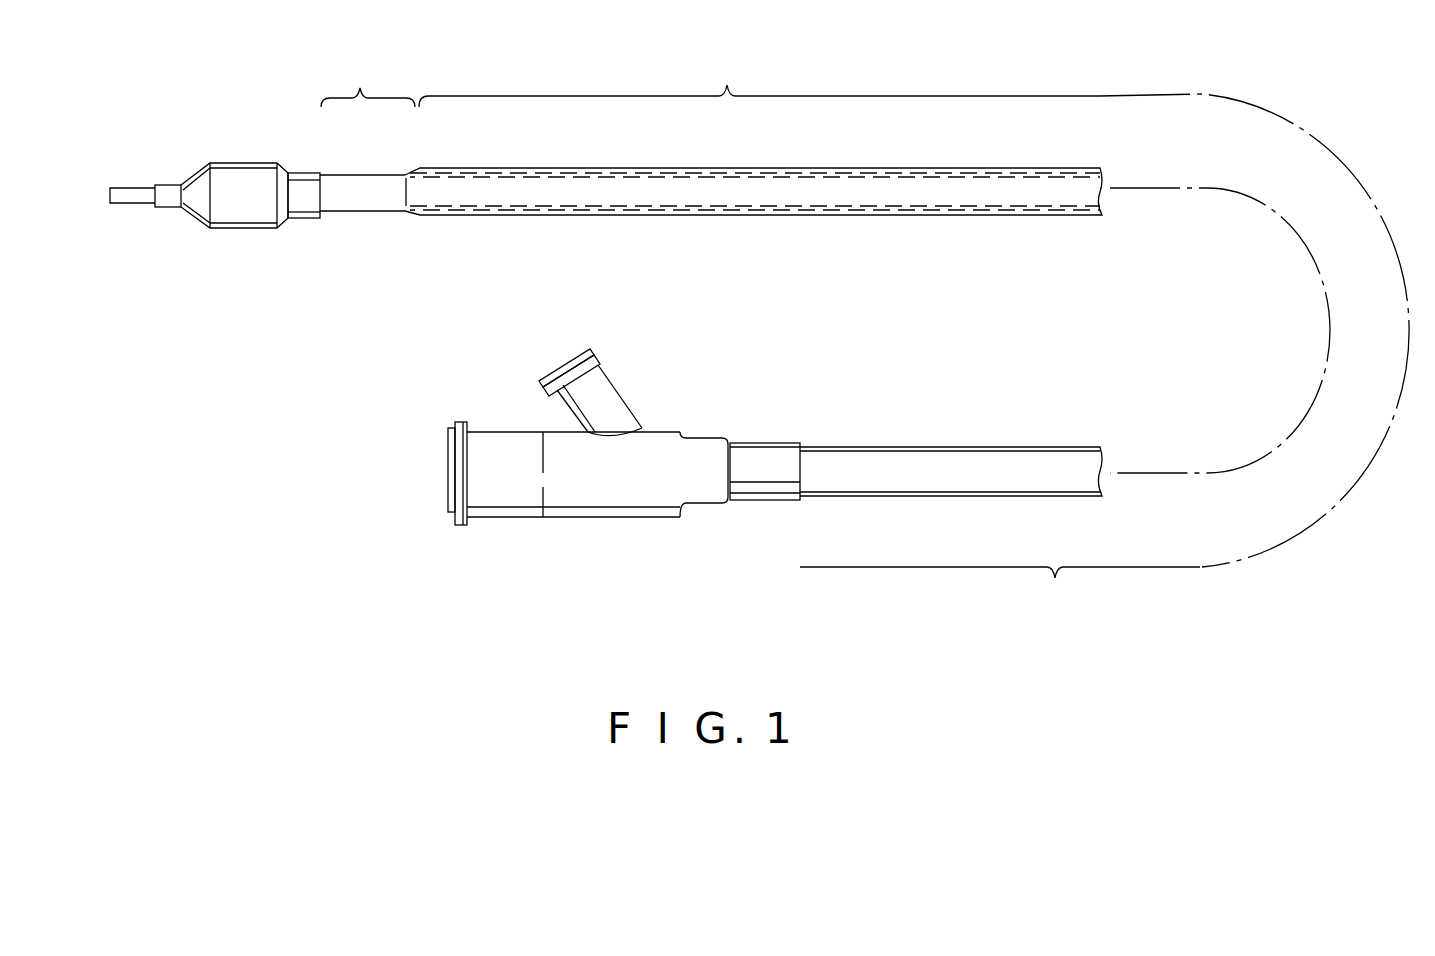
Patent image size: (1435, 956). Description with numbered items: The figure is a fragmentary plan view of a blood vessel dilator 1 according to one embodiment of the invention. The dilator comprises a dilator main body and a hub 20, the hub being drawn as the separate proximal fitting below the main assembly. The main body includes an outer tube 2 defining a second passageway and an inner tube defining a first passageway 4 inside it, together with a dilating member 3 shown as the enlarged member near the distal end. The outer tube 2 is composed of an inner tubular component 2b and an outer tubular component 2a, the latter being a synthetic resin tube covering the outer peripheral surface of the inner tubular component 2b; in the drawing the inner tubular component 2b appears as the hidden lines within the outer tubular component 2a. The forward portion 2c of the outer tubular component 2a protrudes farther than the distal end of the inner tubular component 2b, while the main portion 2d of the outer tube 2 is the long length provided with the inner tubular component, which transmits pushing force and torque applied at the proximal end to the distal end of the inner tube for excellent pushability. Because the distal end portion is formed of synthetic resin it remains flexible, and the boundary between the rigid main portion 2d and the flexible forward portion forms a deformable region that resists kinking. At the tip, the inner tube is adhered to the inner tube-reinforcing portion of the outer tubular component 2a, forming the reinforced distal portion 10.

The blood vessel dilator 1 is at (193, 268).
The reinforced distal portion 10 is at (131, 187).
The dilating member 3 is at (262, 229).
The outer tube 2 is at (370, 212).
The outer tubular component 2a is at (548, 167).
The inner tubular component 2b is at (672, 177).
The forward portion 2c is at (368, 80).
The main portion 2d is at (914, 332).
The first passageway 4 is at (773, 197).
The hub 20 is at (654, 392).